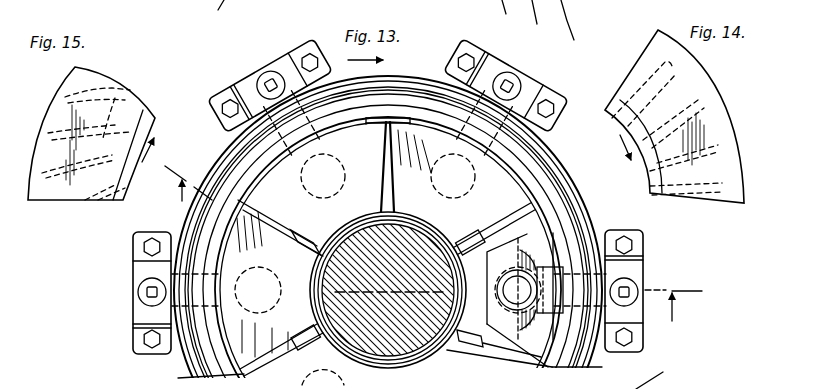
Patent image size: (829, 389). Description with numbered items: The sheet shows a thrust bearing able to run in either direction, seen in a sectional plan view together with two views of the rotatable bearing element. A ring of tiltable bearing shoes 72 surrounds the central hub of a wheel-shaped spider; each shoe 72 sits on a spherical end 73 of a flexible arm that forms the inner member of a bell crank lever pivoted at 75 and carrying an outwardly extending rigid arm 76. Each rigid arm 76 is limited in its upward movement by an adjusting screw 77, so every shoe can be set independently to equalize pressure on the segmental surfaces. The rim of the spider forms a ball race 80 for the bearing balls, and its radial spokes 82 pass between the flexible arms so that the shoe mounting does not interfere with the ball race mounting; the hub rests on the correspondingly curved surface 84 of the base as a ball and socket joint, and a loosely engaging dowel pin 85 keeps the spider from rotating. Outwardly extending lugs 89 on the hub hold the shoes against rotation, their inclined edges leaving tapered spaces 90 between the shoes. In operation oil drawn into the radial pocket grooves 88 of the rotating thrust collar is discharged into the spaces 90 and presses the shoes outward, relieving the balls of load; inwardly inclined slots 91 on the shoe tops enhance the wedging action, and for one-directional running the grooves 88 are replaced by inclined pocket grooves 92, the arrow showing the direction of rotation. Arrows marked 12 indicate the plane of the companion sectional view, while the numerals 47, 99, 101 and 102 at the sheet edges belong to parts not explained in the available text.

In FIG. 13, the section line 12 is at (429, 243).
In FIG. 13, the hub 47 is at (384, 299).
In FIG. 13, the tiltable bearing shoe 72 is at (492, 163).
In FIG. 14, the tiltable bearing shoe 72 is at (722, 128).
In FIG. 15, the tiltable bearing shoe 72 is at (47, 108).
In FIG. 13, the spherical end 73 is at (523, 280).
In FIG. 13, the pivot 75 is at (544, 22).
In FIG. 13, the rigid arm 76 is at (551, 318).
In FIG. 13, the adjusting screw 77 is at (143, 292).
In FIG. 13, the ball race 80 is at (543, 173).
In FIG. 13, the radial spokes 82 is at (575, 30).
In FIG. 13, the curved surface of the base 84 is at (509, 17).
In FIG. 13, the dowel pin 85 is at (210, 15).
In FIG. 14, the radial pocket grooves 88 is at (672, 62).
In FIG. 13, the lugs 89 is at (476, 243).
In FIG. 13, the spaces between the shoes 90 is at (392, 117).
In FIG. 13, the inclined slots 91 is at (407, 147).
In FIG. 15, the inclined pocket grooves 92 is at (115, 88).
In FIG. 13, the lever 99 is at (672, 386).
In FIG. 13, the link 101 is at (702, 373).
In FIG. 13, the link 102 is at (612, 383).